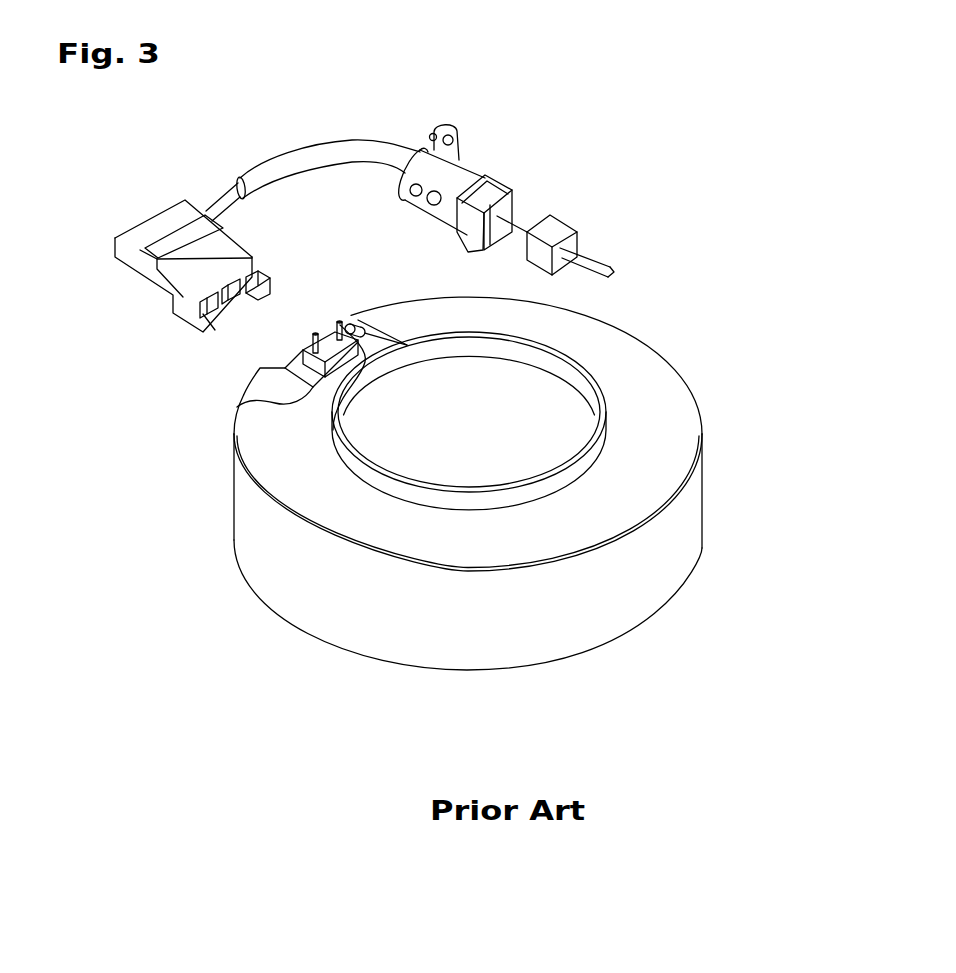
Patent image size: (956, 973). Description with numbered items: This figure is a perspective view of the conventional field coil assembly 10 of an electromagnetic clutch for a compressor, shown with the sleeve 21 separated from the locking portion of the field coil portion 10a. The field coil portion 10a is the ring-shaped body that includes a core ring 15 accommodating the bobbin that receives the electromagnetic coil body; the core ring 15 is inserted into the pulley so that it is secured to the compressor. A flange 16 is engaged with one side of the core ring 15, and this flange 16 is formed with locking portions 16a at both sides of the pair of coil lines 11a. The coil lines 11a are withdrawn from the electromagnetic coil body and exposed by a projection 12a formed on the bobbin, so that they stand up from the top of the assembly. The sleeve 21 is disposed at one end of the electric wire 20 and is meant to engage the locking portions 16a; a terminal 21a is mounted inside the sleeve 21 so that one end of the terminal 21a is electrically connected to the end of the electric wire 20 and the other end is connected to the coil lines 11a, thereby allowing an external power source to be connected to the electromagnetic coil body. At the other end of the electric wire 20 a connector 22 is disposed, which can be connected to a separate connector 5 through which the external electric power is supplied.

The separate connector 5 is at (560, 230).
The field coil assembly 10 is at (185, 473).
The field coil portion 10a is at (703, 386).
The coil lines 11a is at (315, 333).
The projection 12a is at (356, 321).
The core ring 15 is at (688, 540).
The flange 16 is at (682, 417).
The locking portions 16a is at (243, 396).
The electric wire 20 is at (295, 154).
The sleeve 21 is at (162, 220).
The terminal 21a is at (226, 300).
The connector 22 is at (401, 178).